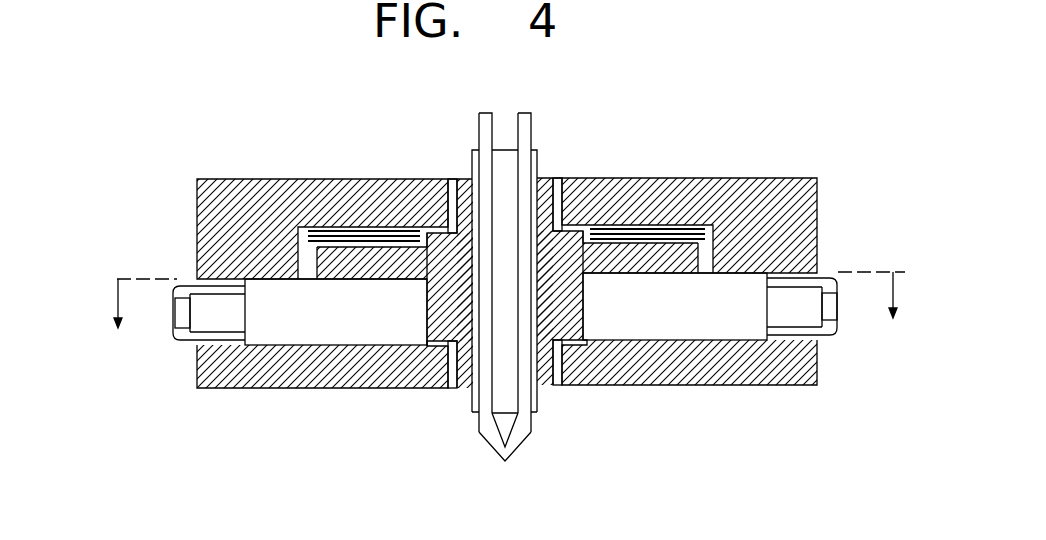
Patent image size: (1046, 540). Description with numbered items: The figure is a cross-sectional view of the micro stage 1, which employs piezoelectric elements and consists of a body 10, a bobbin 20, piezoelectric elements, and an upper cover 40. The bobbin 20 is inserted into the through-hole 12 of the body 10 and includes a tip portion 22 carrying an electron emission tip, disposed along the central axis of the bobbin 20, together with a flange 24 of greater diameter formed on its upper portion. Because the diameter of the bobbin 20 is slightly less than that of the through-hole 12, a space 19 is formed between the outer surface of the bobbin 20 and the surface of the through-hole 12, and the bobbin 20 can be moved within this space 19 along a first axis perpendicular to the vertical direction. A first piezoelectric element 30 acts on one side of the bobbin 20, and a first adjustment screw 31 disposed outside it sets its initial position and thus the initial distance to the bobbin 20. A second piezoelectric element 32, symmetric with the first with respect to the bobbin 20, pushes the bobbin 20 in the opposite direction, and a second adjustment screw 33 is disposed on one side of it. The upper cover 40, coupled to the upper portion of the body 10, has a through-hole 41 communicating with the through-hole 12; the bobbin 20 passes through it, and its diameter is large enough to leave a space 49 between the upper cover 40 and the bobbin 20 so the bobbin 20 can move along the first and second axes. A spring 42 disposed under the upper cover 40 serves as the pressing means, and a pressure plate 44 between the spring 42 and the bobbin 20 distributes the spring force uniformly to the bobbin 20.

The micro stage 1 is at (845, 131).
The body 10 is at (372, 372).
The through-hole 12 is at (577, 362).
The space 19 is at (447, 388).
The bobbin 20 is at (557, 178).
The tip portion 22 is at (483, 435).
The flange 24 is at (322, 262).
The first piezoelectric element 30 is at (295, 335).
The first adjustment screw 31 is at (210, 317).
The second piezoelectric element 32 is at (663, 323).
The second adjustment screw 33 is at (800, 313).
The upper cover 40 is at (767, 197).
The through-hole 41 is at (600, 176).
The spring 42 is at (347, 228).
The pressure plate 44 is at (398, 238).
The space 49 is at (455, 179).